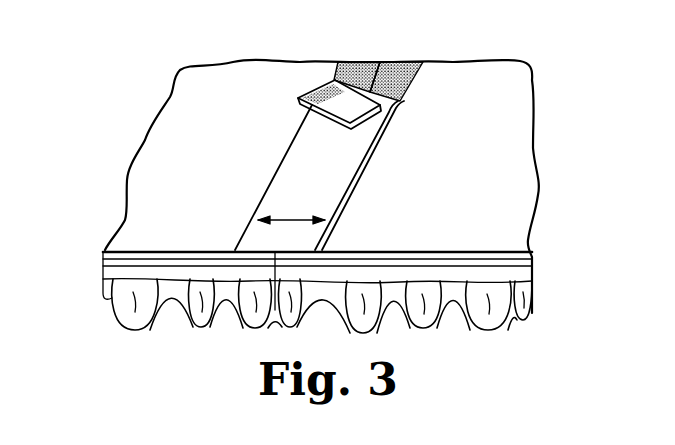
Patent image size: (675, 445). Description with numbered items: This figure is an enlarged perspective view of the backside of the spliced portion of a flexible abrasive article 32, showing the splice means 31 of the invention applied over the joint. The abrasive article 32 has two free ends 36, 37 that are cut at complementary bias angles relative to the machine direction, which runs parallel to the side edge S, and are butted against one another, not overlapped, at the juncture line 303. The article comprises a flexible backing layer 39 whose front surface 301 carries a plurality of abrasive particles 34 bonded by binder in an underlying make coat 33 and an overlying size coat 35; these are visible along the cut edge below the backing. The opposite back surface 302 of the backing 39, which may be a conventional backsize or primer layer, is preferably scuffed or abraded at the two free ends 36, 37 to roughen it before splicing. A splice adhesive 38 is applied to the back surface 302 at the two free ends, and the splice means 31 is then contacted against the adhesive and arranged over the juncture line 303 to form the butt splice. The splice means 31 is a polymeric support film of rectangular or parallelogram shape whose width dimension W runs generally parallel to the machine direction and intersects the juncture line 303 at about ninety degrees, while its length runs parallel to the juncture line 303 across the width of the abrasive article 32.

The splice means 31 is at (342, 160).
The abrasive article 32 is at (538, 72).
The make coat 33 is at (523, 274).
The abrasive particles 34 is at (183, 322).
The size coat 35 is at (488, 318).
The free end 36 is at (213, 202).
The free end 37 is at (440, 221).
The splice adhesive 38 is at (363, 62).
The backing layer 39 is at (103, 261).
The front surface 301 is at (453, 287).
The back surface 302 is at (507, 253).
The juncture line 303 is at (415, 63).
The side edge S is at (143, 248).
The width dimension W is at (293, 218).